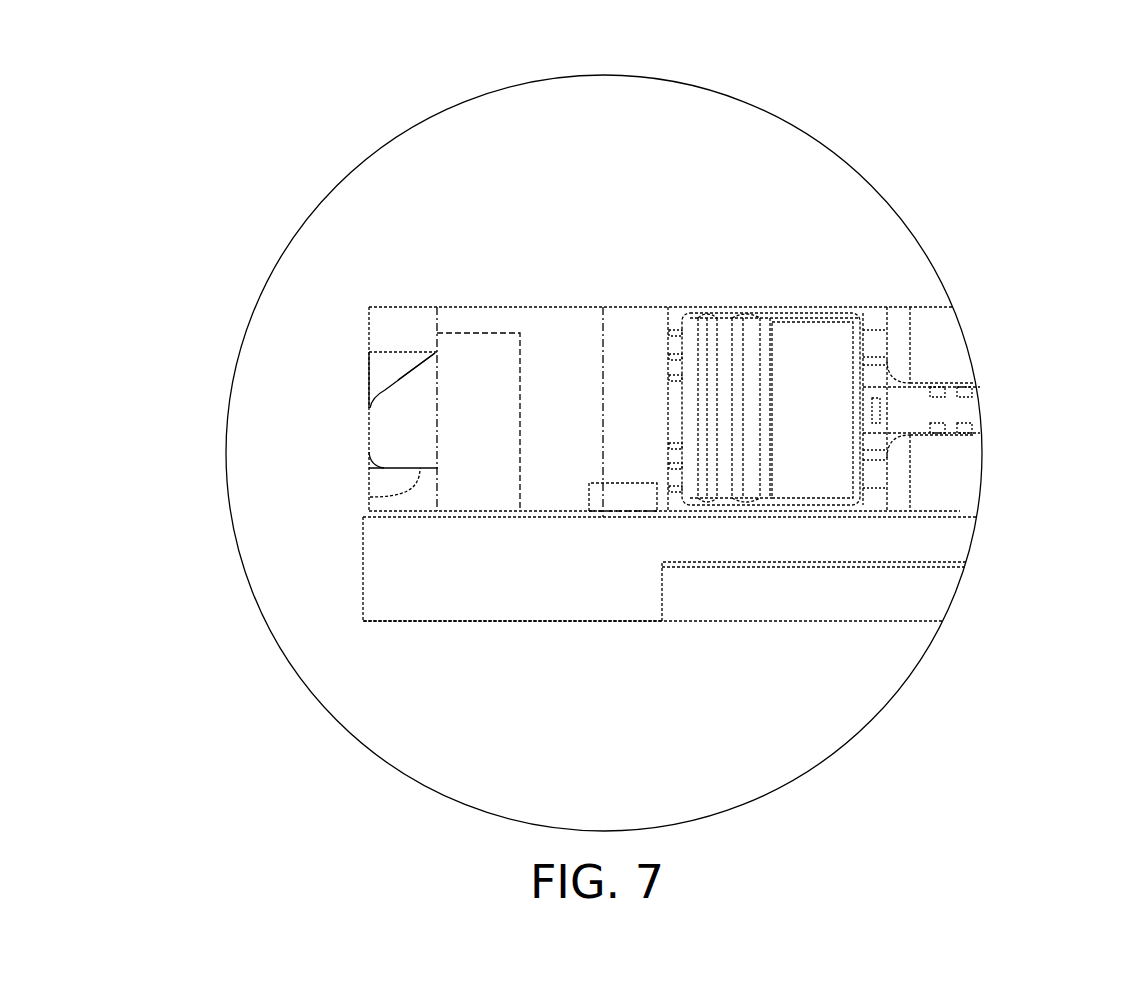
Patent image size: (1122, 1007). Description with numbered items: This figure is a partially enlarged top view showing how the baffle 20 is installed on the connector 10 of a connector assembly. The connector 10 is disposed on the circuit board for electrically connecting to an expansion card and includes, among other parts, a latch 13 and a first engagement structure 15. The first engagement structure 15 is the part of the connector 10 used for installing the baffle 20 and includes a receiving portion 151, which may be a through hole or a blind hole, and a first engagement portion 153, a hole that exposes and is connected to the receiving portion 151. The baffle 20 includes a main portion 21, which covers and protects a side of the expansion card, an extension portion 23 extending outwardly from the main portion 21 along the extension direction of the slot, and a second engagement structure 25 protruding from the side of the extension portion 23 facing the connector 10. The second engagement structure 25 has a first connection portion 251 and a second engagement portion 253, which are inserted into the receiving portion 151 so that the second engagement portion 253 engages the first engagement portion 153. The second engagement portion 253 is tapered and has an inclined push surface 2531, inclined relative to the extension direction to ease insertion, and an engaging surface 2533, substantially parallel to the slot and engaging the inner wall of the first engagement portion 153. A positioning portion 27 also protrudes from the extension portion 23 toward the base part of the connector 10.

The connector 10 is at (975, 340).
The latch 13 is at (815, 340).
The first engagement structure 15 is at (627, 305).
The receiving portion 151 is at (475, 333).
The first engagement portion 153 is at (392, 363).
The baffle 20 is at (980, 573).
The main portion 21 is at (804, 600).
The extension portion 23 is at (493, 629).
The second engagement structure 25 is at (143, 135).
The first connection portion 251 is at (565, 378).
The second engagement portion 253 is at (422, 353).
The inclined push surface 2531 is at (410, 370).
The engaging surface 2533 is at (370, 497).
The positioning portion 27 is at (632, 483).